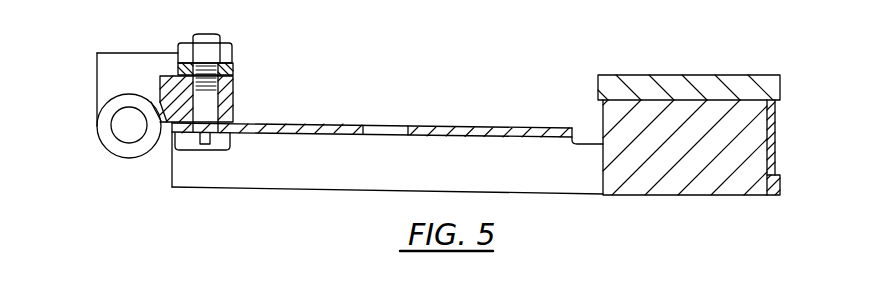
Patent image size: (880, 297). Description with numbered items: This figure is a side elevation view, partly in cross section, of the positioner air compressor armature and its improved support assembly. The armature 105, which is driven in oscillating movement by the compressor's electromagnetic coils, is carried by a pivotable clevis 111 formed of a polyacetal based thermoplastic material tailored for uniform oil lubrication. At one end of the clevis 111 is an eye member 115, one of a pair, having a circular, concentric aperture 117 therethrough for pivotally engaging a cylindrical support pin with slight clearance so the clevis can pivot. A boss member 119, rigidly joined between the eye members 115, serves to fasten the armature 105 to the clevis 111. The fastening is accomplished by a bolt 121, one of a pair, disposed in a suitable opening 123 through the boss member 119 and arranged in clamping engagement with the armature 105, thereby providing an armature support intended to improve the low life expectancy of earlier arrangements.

The armature 105 is at (427, 125).
The pivotable clevis 111 is at (151, 80).
The eye member 115 is at (135, 154).
The circular concentric aperture 117 is at (112, 124).
The boss member 119 is at (228, 88).
The bolt 121 is at (219, 42).
The opening 123 is at (215, 102).